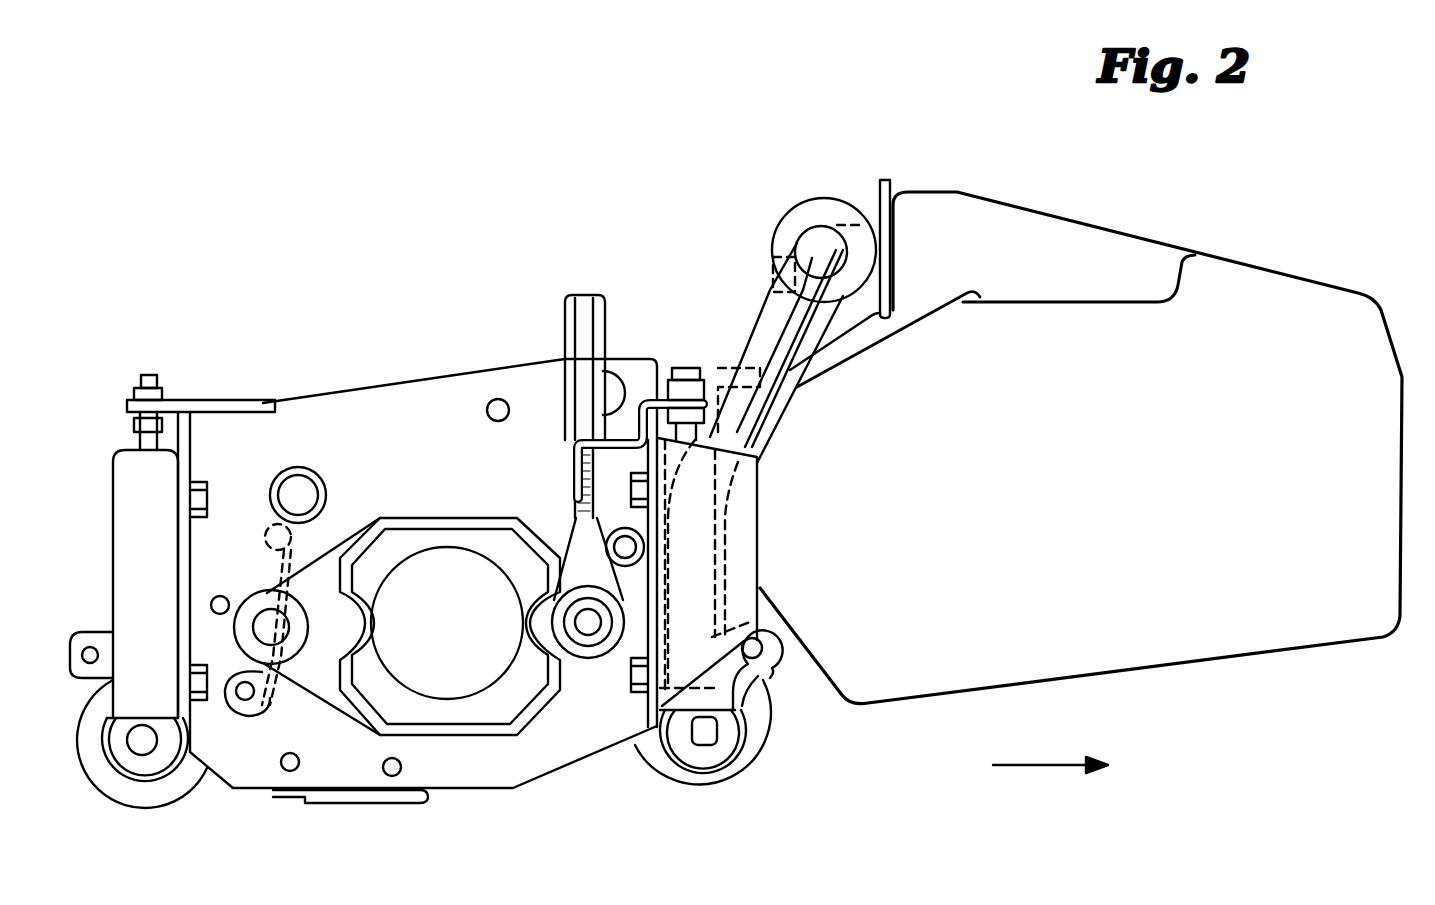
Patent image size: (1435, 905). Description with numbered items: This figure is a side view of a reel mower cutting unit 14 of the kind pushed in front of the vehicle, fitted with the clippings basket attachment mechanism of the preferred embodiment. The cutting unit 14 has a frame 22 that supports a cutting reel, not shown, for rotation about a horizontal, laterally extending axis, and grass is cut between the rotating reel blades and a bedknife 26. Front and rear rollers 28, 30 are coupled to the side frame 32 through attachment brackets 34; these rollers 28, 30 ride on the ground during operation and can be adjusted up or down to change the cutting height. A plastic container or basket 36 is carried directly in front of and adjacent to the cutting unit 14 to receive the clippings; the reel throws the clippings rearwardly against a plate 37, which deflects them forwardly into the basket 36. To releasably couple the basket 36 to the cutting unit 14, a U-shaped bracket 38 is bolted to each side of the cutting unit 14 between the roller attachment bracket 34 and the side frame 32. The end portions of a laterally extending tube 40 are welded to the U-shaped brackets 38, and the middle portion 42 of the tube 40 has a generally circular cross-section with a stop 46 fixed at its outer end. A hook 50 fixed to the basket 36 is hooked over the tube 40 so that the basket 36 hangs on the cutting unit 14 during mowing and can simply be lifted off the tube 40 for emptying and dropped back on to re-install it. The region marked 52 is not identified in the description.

The cutting unit 14 is at (341, 338).
The frame 22 is at (416, 372).
The bedknife 26 is at (428, 802).
The front roller 28 is at (702, 802).
The rear roller 30 is at (128, 807).
The side frame 32 is at (467, 370).
The attachment bracket 34 is at (113, 504).
The basket 36 is at (1228, 260).
The plate 37 is at (277, 556).
The U-shaped bracket 38 is at (759, 497).
The tube 40 is at (848, 226).
The middle portion 42 is at (796, 240).
The stop 46 is at (880, 214).
The hook 50 is at (770, 274).
The cutting deck 52 is at (1050, 483).